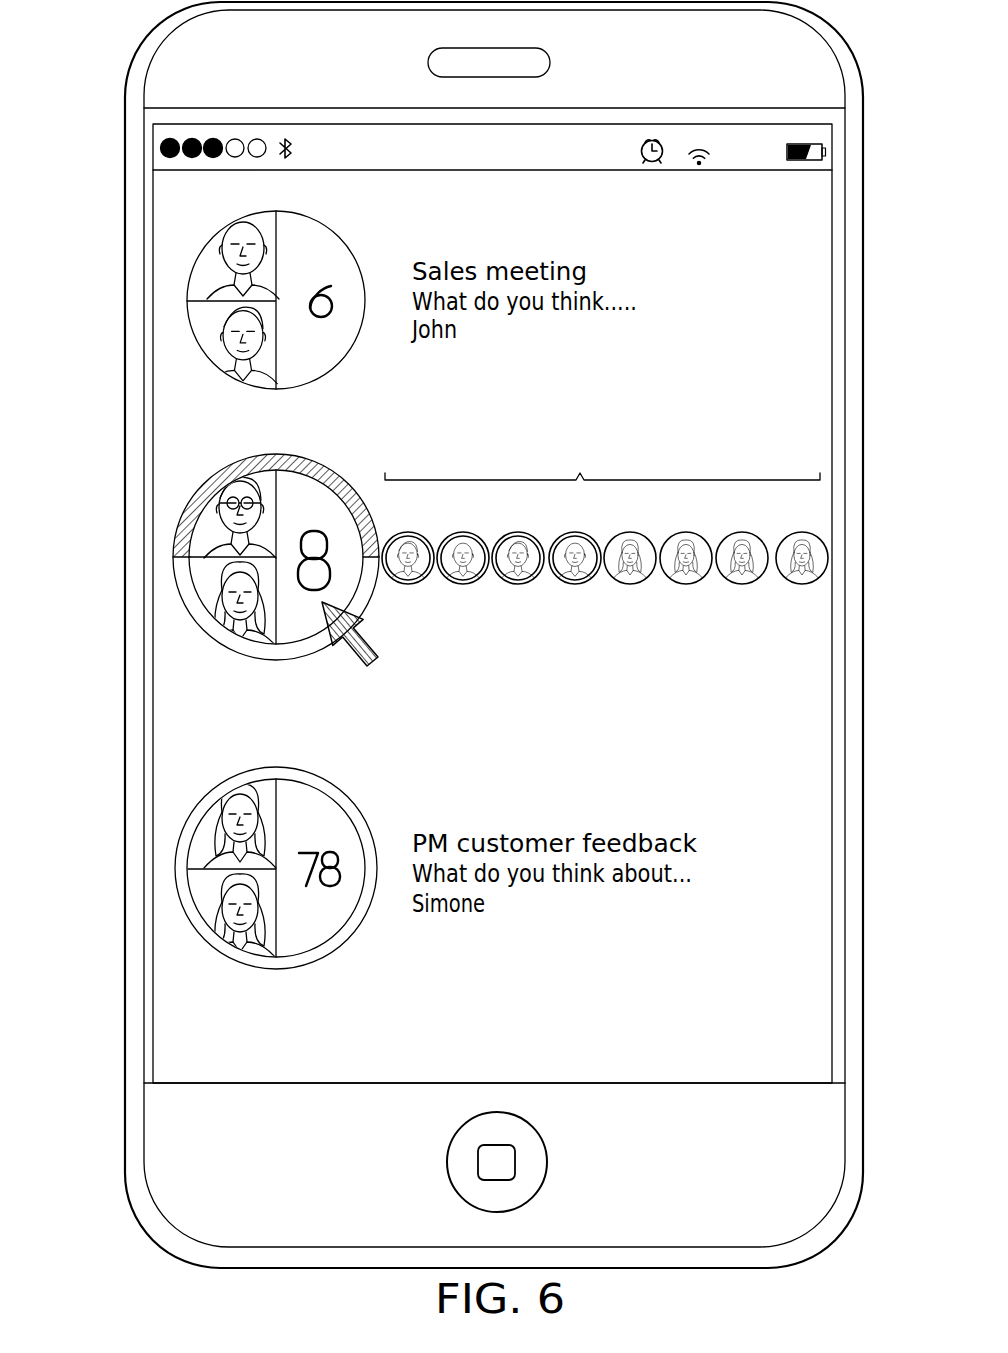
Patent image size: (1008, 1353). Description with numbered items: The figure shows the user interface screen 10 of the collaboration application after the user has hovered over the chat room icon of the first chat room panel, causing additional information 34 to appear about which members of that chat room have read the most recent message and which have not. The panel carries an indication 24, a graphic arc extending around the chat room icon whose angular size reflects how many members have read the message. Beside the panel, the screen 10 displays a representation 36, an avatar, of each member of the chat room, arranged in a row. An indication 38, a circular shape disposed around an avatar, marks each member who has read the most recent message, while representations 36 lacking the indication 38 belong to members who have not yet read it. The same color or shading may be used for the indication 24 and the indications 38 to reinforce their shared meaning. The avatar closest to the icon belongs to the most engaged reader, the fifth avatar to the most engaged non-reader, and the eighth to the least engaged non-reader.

The user interface screen 10 is at (175, 197).
The indication 24 is at (343, 472).
The information 34 is at (605, 548).
The representation 36 is at (415, 532).
The indication 38 is at (568, 583).